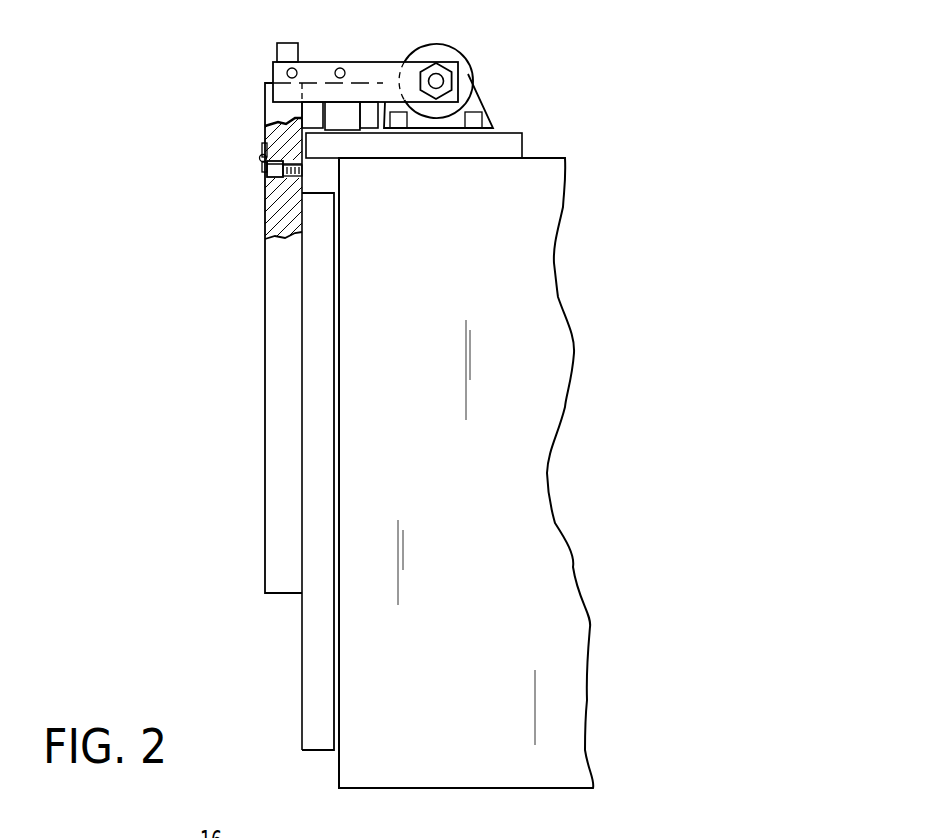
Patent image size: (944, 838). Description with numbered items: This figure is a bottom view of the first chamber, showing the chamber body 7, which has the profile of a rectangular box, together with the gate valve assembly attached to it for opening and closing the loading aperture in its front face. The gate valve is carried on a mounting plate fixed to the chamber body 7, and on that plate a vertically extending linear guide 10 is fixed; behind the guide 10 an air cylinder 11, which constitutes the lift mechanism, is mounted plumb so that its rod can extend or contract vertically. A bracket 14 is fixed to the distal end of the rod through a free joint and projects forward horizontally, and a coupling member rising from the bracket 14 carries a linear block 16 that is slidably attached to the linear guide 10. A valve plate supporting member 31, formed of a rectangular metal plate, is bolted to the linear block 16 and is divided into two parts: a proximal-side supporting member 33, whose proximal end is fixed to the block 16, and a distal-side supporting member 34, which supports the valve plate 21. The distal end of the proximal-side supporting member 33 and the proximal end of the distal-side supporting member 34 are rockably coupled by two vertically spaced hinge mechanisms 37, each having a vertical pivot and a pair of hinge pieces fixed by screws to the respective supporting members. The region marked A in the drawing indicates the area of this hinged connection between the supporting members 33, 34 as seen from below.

The chamber body 7 is at (468, 768).
The linear guide 10 is at (345, 122).
The air cylinder 11 is at (463, 53).
The bracket 14 is at (388, 70).
The linear block 16 is at (315, 112).
The valve plate 21 is at (313, 677).
The valve plate supporting member 31 is at (252, 274).
The proximal-side supporting member 33 is at (262, 131).
The distal-side supporting member 34 is at (277, 420).
The hinge mechanism 37 is at (258, 158).
The region A is at (253, 110).